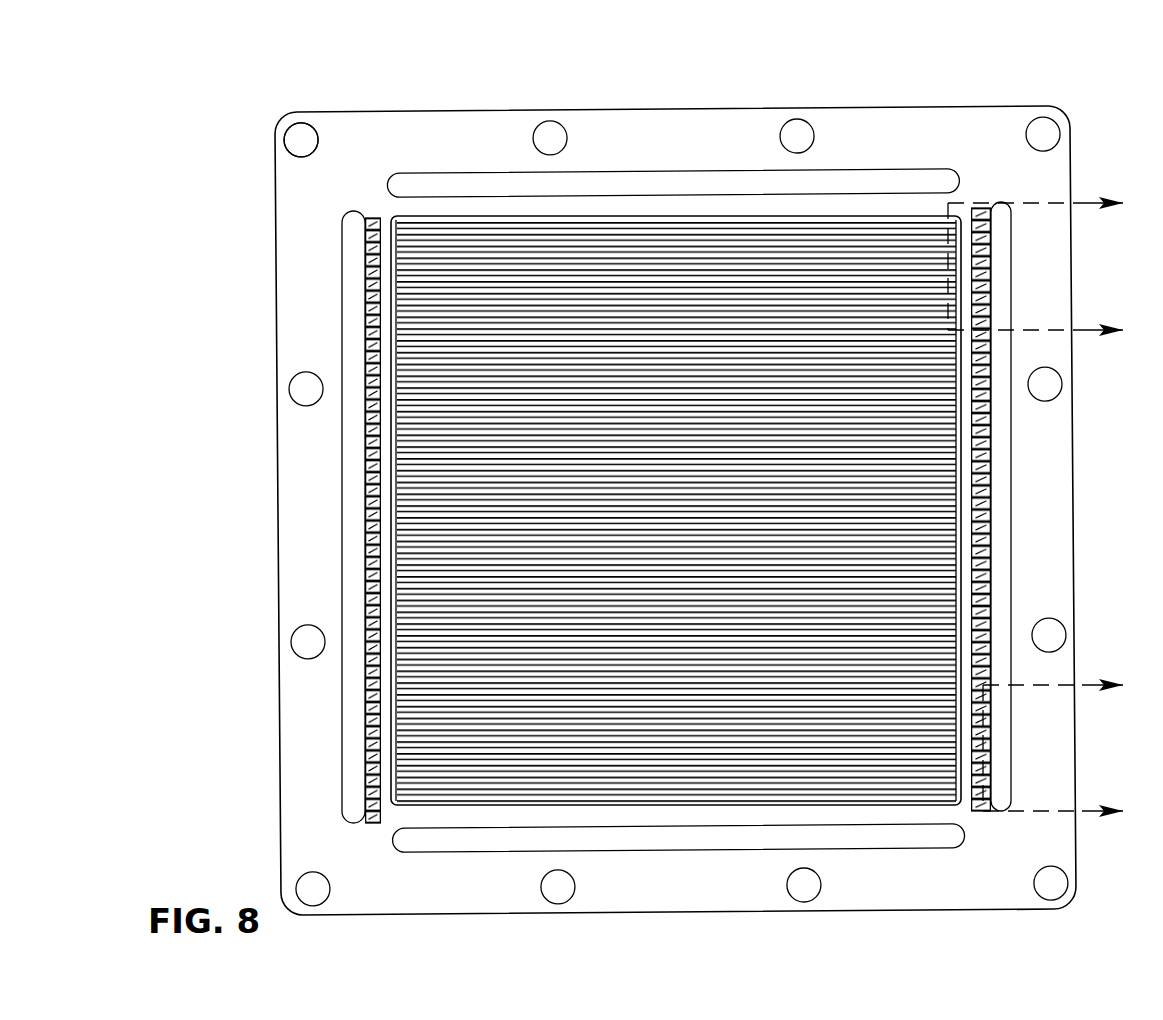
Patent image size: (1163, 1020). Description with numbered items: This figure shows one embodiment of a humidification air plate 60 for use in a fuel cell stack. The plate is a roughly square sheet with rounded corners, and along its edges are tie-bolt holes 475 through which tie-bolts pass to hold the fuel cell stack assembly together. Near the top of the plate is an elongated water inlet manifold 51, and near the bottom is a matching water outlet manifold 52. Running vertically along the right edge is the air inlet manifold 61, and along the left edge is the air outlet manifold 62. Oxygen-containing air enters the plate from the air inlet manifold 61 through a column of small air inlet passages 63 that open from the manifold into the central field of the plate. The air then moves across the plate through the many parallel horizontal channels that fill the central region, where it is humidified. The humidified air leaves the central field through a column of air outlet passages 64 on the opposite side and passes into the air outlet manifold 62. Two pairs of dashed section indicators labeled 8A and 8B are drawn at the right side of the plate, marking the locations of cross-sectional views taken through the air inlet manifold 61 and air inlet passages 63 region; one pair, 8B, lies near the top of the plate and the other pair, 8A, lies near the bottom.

The humidification air plate 60 is at (675, 486).
The tie-bolt holes 475 is at (355, 112).
The water inlet manifold 51 is at (673, 132).
The water outlet manifold 52 is at (678, 882).
The air inlet manifold 61 is at (1073, 506).
The air outlet manifold 62 is at (279, 517).
The air inlet passages 63 is at (981, 565).
The air outlet passages 64 is at (357, 575).
The section line 8A is at (1069, 748).
The section line 8B is at (1051, 267).